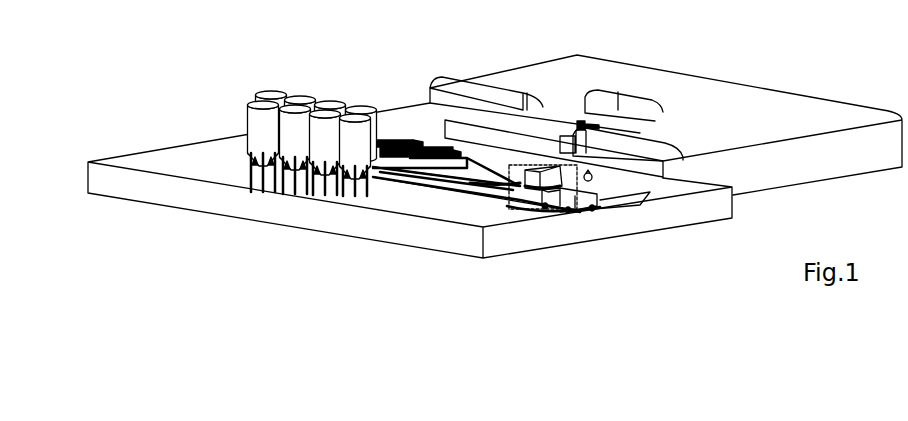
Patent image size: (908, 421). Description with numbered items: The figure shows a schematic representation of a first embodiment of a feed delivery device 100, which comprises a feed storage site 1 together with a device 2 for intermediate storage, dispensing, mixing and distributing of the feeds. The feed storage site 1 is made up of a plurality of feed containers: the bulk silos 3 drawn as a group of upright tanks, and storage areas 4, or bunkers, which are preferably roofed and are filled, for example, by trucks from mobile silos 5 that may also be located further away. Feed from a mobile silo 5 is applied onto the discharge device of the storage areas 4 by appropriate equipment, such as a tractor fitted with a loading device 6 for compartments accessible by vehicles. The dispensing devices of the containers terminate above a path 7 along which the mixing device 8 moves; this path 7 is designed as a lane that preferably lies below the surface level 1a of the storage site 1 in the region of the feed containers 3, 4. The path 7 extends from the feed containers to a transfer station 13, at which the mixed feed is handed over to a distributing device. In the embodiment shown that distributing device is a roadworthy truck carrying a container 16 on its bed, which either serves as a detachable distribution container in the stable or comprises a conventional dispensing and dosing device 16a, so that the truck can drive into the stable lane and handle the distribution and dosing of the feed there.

The feed delivery device 100 is at (133, 90).
The feed storage site 1 is at (834, 88).
The surface level of the storage site 1a is at (222, 166).
The device for intermediate storage, dispensing, mixing and distributing 2 is at (353, 197).
The bulk silo 3 is at (255, 120).
The storage area 4 is at (398, 147).
The mobile silo 5 is at (758, 35).
The loading device 6 is at (575, 128).
The path 7 is at (410, 183).
The mixing device 8 is at (560, 170).
The transfer station 13 is at (635, 188).
The container 16 is at (569, 200).
The dispensing and dosing device 16a is at (600, 198).